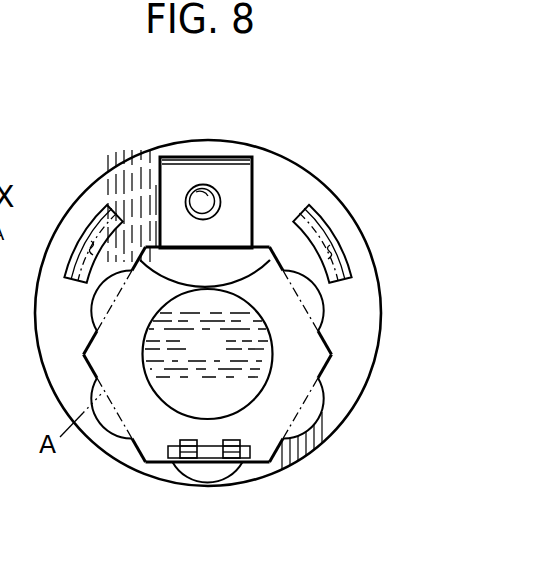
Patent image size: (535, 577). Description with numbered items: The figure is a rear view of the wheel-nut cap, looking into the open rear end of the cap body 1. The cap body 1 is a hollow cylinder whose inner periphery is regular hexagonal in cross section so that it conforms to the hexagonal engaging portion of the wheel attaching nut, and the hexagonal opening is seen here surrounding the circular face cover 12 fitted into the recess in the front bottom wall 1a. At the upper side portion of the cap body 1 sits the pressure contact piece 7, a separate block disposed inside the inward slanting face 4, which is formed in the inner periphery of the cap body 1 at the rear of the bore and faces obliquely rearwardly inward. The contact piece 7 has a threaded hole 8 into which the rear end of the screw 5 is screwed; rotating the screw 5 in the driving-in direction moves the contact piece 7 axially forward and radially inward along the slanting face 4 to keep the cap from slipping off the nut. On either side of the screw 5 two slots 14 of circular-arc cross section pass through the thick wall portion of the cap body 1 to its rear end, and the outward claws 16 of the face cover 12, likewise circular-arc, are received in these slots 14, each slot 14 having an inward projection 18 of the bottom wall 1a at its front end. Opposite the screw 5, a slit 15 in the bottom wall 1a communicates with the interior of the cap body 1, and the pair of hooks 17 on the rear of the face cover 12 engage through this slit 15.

The cap body 1 is at (364, 373).
The bottom wall 1a is at (312, 373).
The inward slanting face 4 is at (239, 159).
The screw 5 is at (192, 190).
The pressure contact piece 7 is at (237, 188).
The threaded hole 8 is at (208, 187).
The face cover 12 is at (222, 361).
The slots 14 is at (82, 277).
The slit 15 is at (208, 446).
The outward claws 16 is at (102, 207).
The hooks 17 is at (222, 461).
The inward projection 18 is at (88, 230).